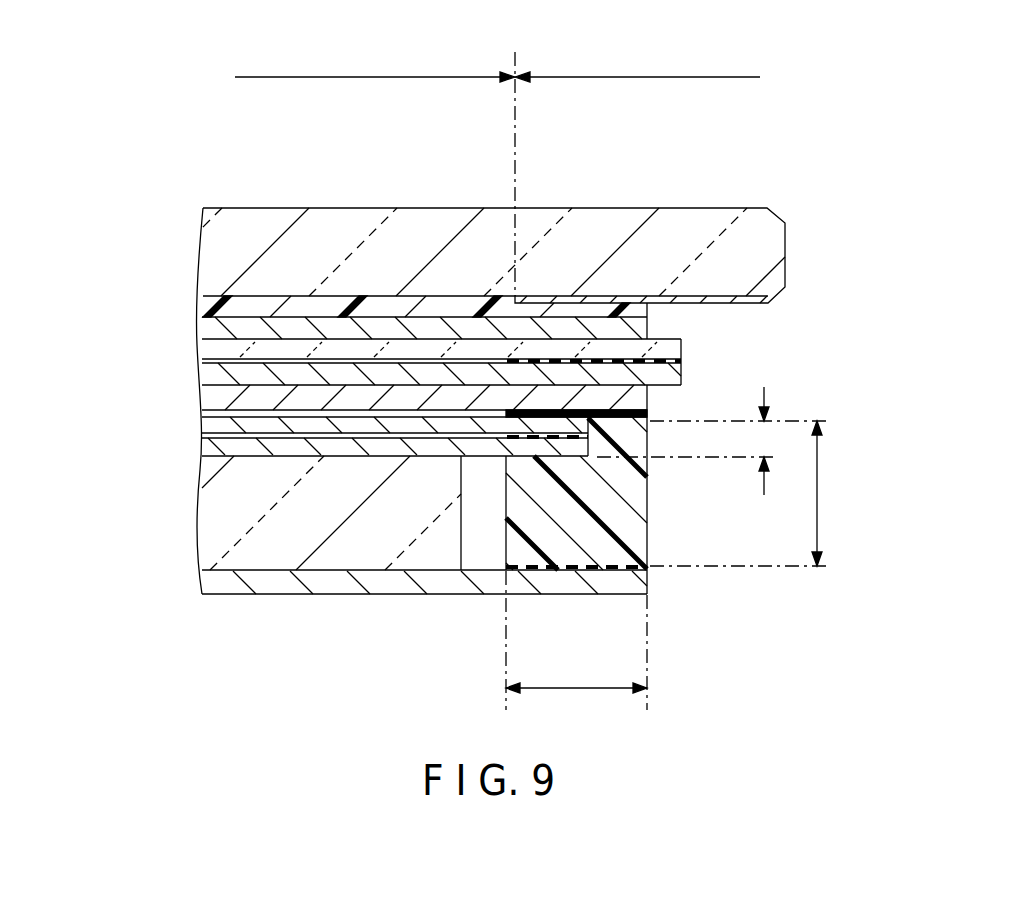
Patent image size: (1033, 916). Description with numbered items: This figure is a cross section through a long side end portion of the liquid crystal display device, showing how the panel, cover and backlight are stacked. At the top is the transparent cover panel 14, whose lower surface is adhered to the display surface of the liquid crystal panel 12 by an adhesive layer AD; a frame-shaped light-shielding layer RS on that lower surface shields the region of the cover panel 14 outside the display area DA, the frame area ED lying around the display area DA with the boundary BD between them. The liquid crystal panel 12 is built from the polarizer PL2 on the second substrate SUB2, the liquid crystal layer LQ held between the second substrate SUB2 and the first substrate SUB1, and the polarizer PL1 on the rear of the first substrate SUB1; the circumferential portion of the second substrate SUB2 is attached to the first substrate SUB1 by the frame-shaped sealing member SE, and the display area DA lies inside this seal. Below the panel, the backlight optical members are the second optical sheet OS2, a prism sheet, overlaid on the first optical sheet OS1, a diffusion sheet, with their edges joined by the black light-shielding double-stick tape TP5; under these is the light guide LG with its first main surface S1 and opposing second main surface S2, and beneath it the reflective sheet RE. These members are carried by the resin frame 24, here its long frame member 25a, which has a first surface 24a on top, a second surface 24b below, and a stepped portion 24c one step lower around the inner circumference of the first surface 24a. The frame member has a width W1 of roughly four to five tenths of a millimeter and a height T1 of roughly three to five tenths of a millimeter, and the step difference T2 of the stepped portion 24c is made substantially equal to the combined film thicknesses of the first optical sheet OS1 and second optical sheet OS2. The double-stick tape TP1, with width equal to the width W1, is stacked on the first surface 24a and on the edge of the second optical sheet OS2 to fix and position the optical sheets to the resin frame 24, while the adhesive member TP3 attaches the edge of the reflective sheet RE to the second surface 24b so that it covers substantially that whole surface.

The cover panel 14 is at (218, 240).
The liquid crystal panel 12 is at (95, 282).
The polarizer PL2 is at (204, 312).
The second substrate SUB2 is at (202, 334).
The liquid crystal layer LQ is at (200, 360).
The first substrate SUB1 is at (198, 377).
The polarizer PL1 is at (202, 399).
The second optical sheet OS2 is at (207, 427).
The first optical sheet OS1 is at (207, 450).
The light guide LG is at (205, 529).
The reflective sheet RE is at (225, 585).
The first main surface S1 is at (312, 443).
The second main surface S2 is at (280, 572).
The double-stick tape TP5 is at (533, 440).
The adhesive member TP3 is at (607, 572).
The double-stick tape TP1 is at (557, 413).
The resin frame 24 is at (648, 502).
The first surface 24a is at (622, 413).
The second surface 24b is at (550, 572).
The stepped portion 24c is at (625, 438).
The long frame member 25a is at (642, 525).
The sealing member SE is at (650, 368).
The light-shielding layer RS is at (748, 303).
The adhesive layer AD is at (318, 307).
The display area DA is at (375, 64).
The frame area ED is at (637, 64).
The boundary BD is at (517, 64).
The width W1 is at (576, 647).
The height T1 is at (751, 493).
The step difference T2 is at (713, 441).